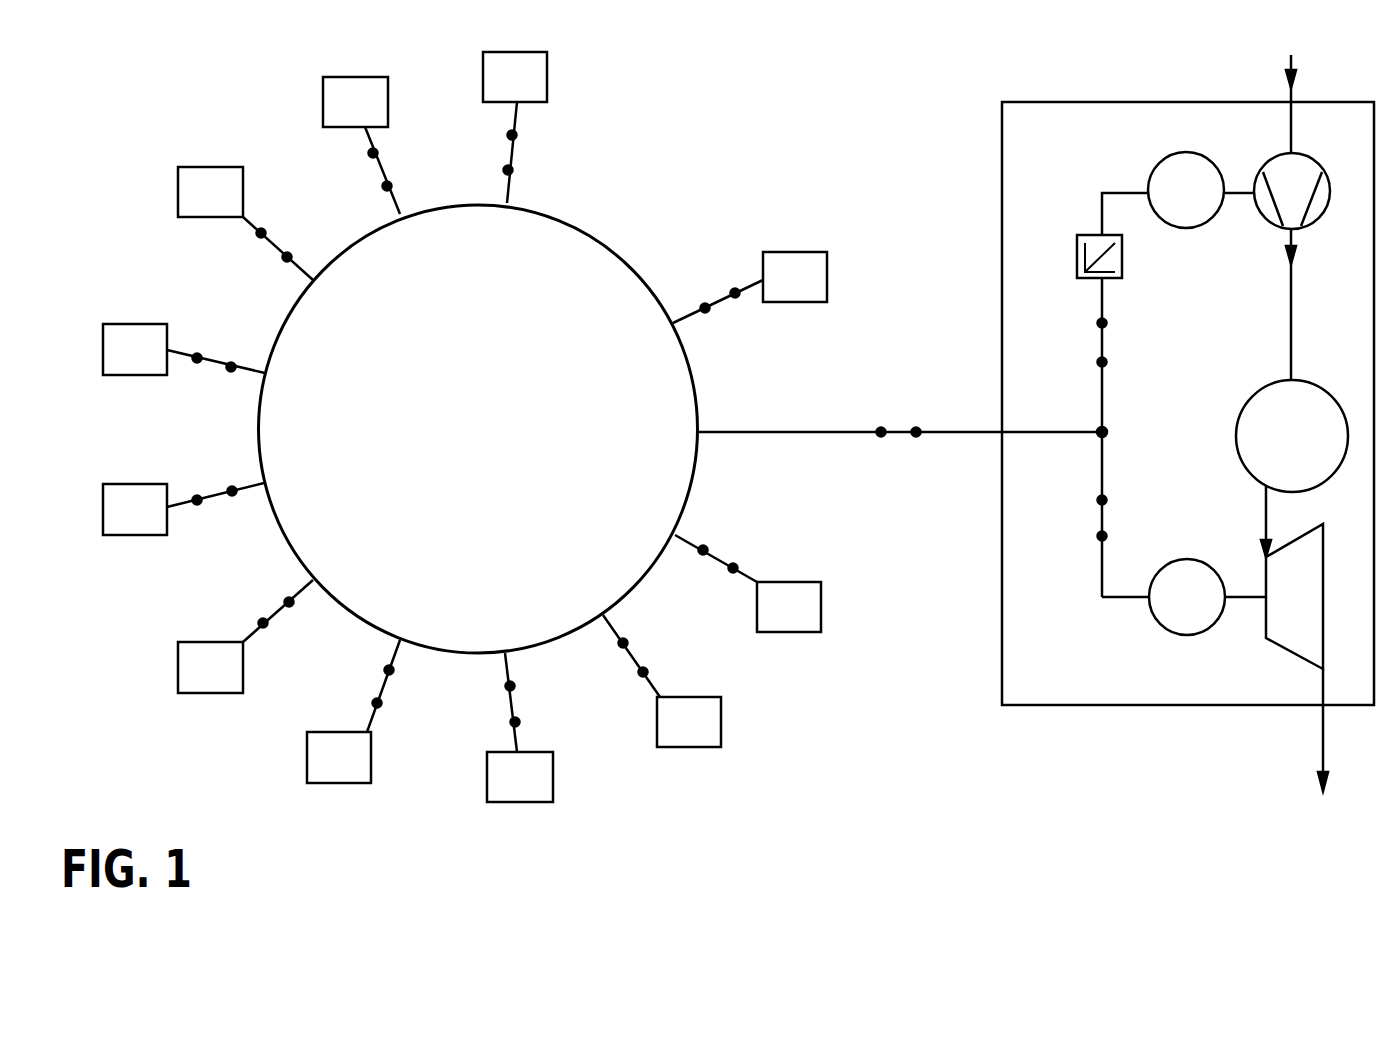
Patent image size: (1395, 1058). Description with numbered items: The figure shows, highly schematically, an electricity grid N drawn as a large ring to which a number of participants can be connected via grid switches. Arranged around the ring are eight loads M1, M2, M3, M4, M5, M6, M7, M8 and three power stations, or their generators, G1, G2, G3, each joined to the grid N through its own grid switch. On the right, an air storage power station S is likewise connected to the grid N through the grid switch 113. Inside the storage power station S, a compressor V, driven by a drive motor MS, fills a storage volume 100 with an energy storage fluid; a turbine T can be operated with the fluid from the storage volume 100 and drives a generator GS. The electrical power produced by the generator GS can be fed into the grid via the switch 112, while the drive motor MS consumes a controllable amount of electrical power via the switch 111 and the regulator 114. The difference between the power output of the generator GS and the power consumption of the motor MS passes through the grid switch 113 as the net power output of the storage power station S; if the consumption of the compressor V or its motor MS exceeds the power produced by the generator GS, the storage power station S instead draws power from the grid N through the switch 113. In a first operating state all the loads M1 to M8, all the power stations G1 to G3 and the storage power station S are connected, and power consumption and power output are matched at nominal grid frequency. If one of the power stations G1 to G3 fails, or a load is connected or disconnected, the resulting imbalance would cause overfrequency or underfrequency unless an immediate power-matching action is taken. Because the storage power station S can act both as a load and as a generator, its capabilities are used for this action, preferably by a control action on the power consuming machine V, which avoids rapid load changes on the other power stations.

The storage volume 100 is at (1292, 436).
The switch 111 is at (1066, 355).
The switch 112 is at (1066, 514).
The grid switch 113 is at (902, 411).
The regulator 114 is at (1122, 255).
The electricity grid N is at (597, 235).
The storage power station S is at (1082, 665).
The compressor unit, power consuming machine V is at (1301, 217).
The turbine unit, power generating machine T is at (1294, 638).
The drive motor for the power consuming machine MS is at (1201, 190).
The generator for the power generating machine GS is at (1184, 597).
The load M1 is at (245, 223).
The load M2 is at (184, 349).
The load M3 is at (245, 636).
The load M4 is at (520, 727).
The load M5 is at (662, 681).
The load M6 is at (515, 127).
The load M7 is at (748, 583).
The load M8 is at (750, 287).
The power station G1 is at (183, 509).
The power station G2 is at (353, 711).
The power station G3 is at (361, 145).